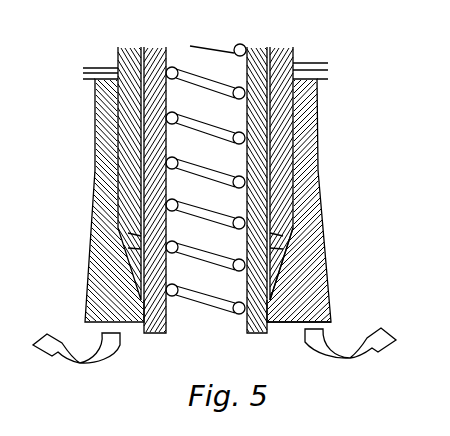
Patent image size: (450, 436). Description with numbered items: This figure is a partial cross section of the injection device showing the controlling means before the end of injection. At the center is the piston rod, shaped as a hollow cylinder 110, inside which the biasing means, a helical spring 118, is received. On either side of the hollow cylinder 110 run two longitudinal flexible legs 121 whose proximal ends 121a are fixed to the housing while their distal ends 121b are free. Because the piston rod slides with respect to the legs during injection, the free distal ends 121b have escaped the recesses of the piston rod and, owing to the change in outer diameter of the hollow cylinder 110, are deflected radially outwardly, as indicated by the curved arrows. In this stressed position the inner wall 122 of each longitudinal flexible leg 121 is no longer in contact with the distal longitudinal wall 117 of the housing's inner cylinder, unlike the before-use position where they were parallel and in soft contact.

The hollow cylinder 110 is at (122, 190).
The distal longitudinal wall 117 is at (112, 112).
The helical spring 118 is at (237, 138).
The longitudinal flexible legs 121 is at (330, 192).
The proximal ends 121a is at (320, 86).
The distal ends 121b is at (330, 296).
The inner wall 122 is at (303, 208).